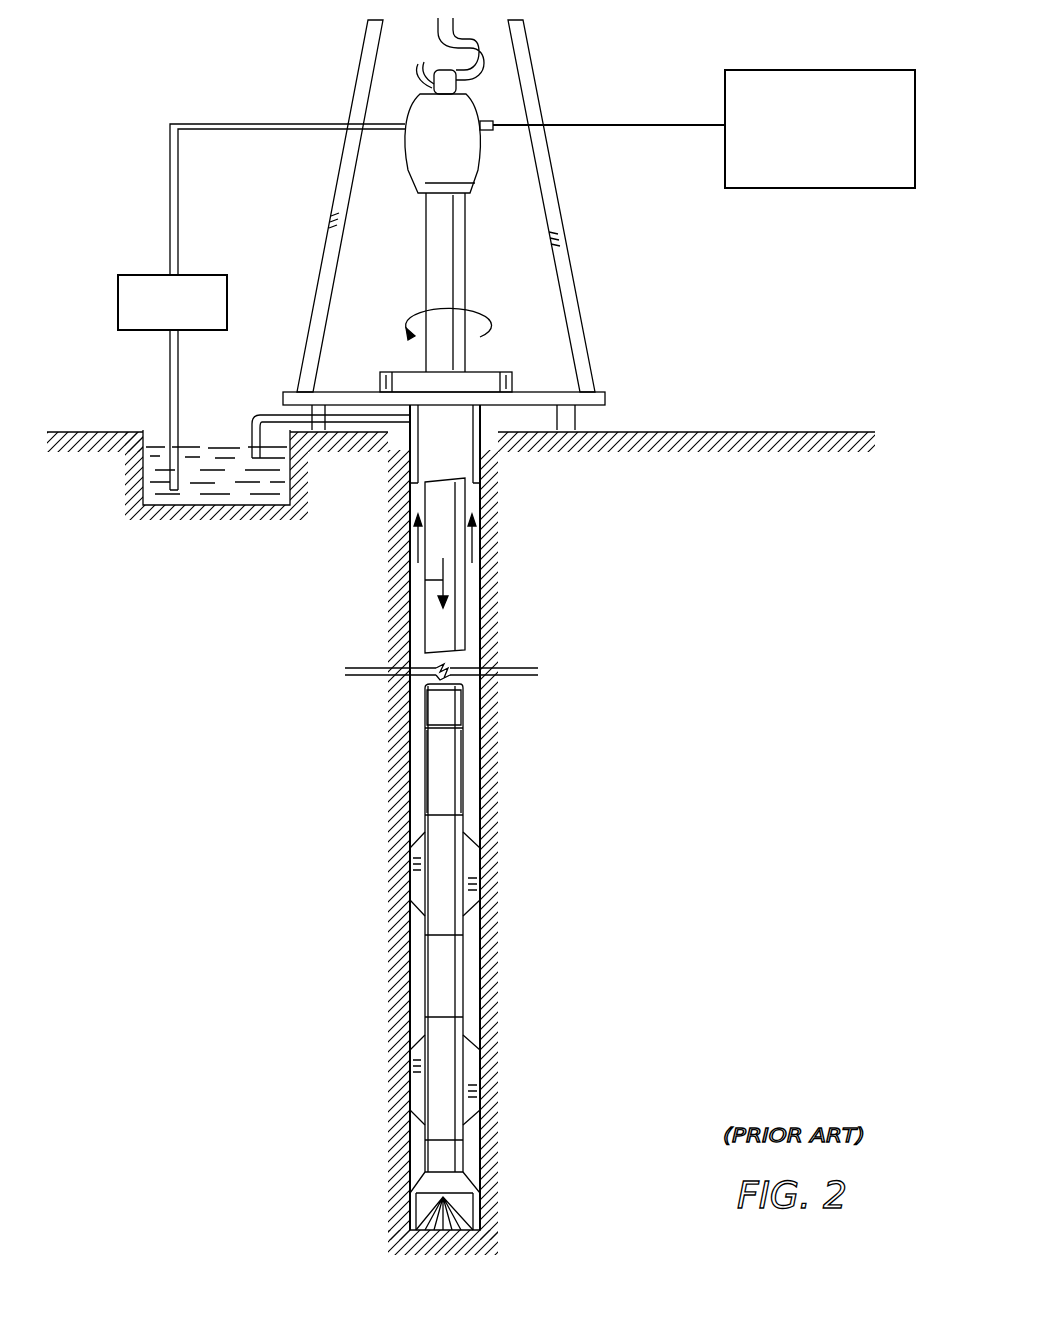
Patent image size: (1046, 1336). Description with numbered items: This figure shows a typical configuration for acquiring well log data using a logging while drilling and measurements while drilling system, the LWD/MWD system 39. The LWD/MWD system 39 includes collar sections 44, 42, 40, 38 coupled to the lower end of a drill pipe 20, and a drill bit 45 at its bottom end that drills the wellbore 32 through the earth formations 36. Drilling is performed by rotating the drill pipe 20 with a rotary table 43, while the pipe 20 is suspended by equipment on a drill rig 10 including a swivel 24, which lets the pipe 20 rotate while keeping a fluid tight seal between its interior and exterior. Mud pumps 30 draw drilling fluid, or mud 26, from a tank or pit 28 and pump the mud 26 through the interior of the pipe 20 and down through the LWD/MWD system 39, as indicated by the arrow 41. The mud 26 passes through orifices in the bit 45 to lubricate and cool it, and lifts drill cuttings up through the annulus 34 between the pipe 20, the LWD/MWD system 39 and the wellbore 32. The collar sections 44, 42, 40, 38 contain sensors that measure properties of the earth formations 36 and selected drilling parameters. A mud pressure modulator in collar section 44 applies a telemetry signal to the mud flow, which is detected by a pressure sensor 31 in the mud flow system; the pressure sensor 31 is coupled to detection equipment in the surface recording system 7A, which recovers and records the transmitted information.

The surface recording system 7A is at (813, 190).
The drill rig 10 is at (632, 390).
The drill pipe 20 is at (456, 264).
The swivel 24 is at (423, 173).
The drilling fluid (mud) 26 is at (218, 508).
The tank or pit 28 is at (131, 484).
The mud pumps 30 is at (142, 275).
The pressure sensor 31 is at (495, 131).
The wellbore 32 is at (486, 634).
The annulus 34 is at (474, 550).
The earth formations 36 is at (636, 722).
The collar section 38 is at (436, 1082).
The LWD/MWD system 39 is at (442, 712).
The collar section 40 is at (456, 970).
The arrow 41 is at (426, 581).
The collar section 42 is at (441, 877).
The rotary table 43 is at (516, 372).
The collar section 44 is at (421, 777).
The drill bit 45 is at (456, 1213).